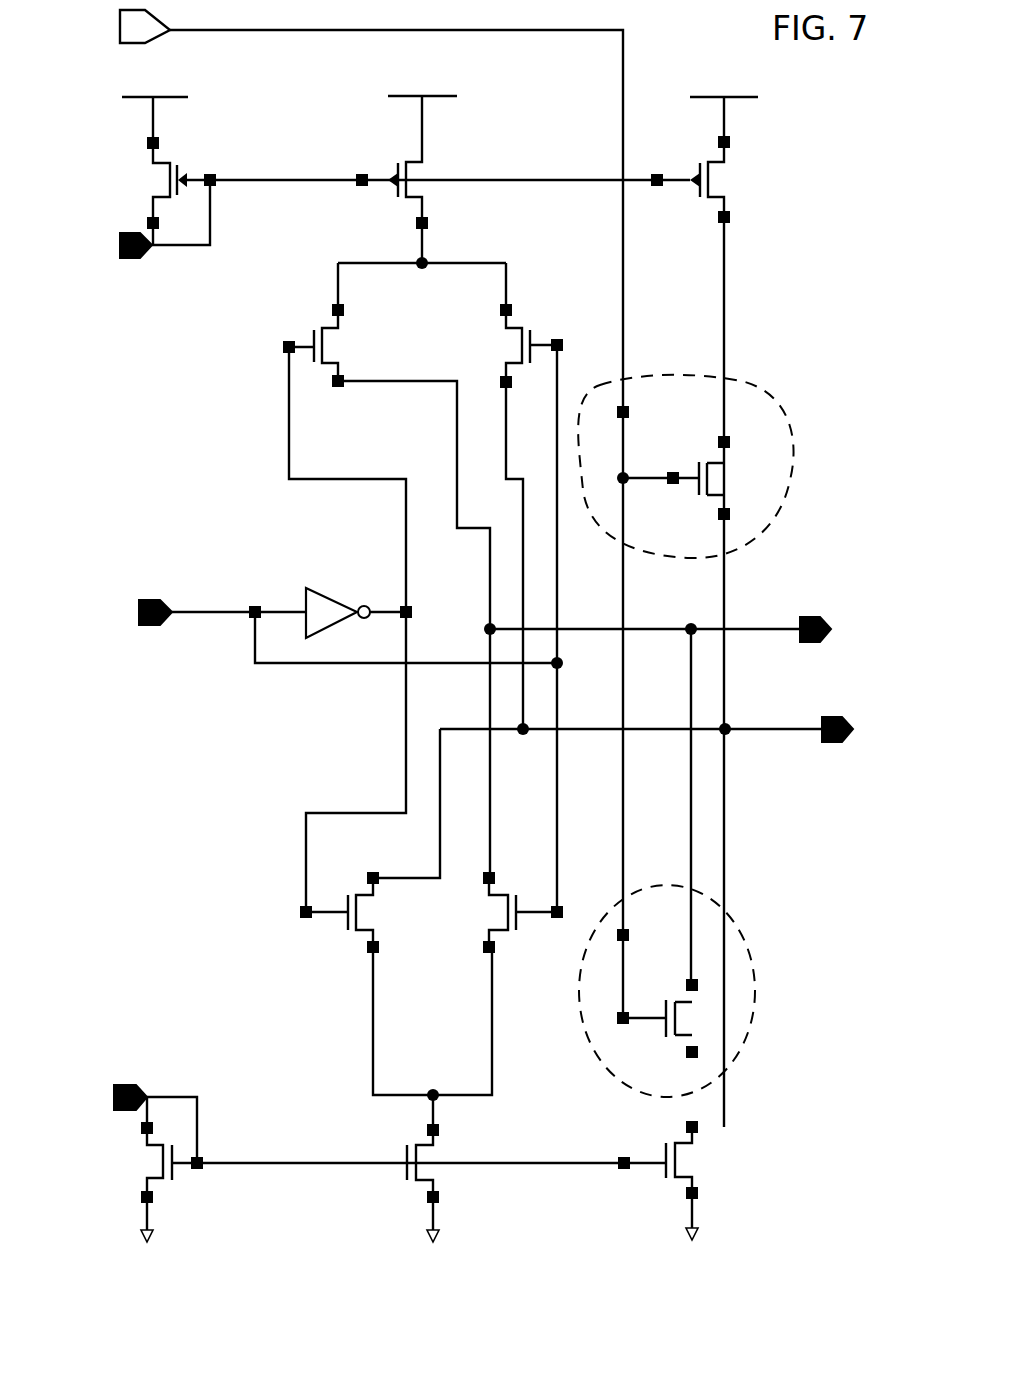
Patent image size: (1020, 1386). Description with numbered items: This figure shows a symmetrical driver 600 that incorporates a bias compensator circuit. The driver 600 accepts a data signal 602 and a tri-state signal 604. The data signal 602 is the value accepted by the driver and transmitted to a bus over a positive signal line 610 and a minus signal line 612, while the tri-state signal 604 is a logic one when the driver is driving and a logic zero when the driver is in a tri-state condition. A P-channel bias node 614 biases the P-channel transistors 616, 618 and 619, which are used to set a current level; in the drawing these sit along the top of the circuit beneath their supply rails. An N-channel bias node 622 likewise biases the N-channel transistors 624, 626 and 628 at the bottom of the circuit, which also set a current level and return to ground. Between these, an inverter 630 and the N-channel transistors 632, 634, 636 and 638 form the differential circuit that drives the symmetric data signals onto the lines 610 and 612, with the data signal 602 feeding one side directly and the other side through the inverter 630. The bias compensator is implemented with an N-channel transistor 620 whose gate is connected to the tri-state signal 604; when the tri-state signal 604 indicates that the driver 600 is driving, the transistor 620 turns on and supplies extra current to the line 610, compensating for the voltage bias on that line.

The symmetrical driver 600 is at (805, 116).
The data signal 602 is at (160, 625).
The tri-state signal 604 is at (158, 33).
The positive signal line 610 is at (840, 742).
The minus signal line 612 is at (815, 642).
The P-channel bias node 614 is at (143, 258).
The P-channel transistor 616 is at (172, 164).
The P-channel transistor 618 is at (425, 165).
The P-channel transistor 619 is at (720, 175).
The N-channel transistor 620 is at (770, 537).
The N-channel bias node 622 is at (757, 1003).
The N-channel transistor 624 is at (158, 1170).
The N-channel transistor 626 is at (437, 1178).
The N-channel transistor 628 is at (690, 1165).
The inverter 630 is at (336, 590).
The N-channel transistor 632 is at (329, 333).
The N-channel transistor 634 is at (520, 333).
The N-channel transistor 636 is at (346, 931).
The N-channel transistor 638 is at (503, 935).